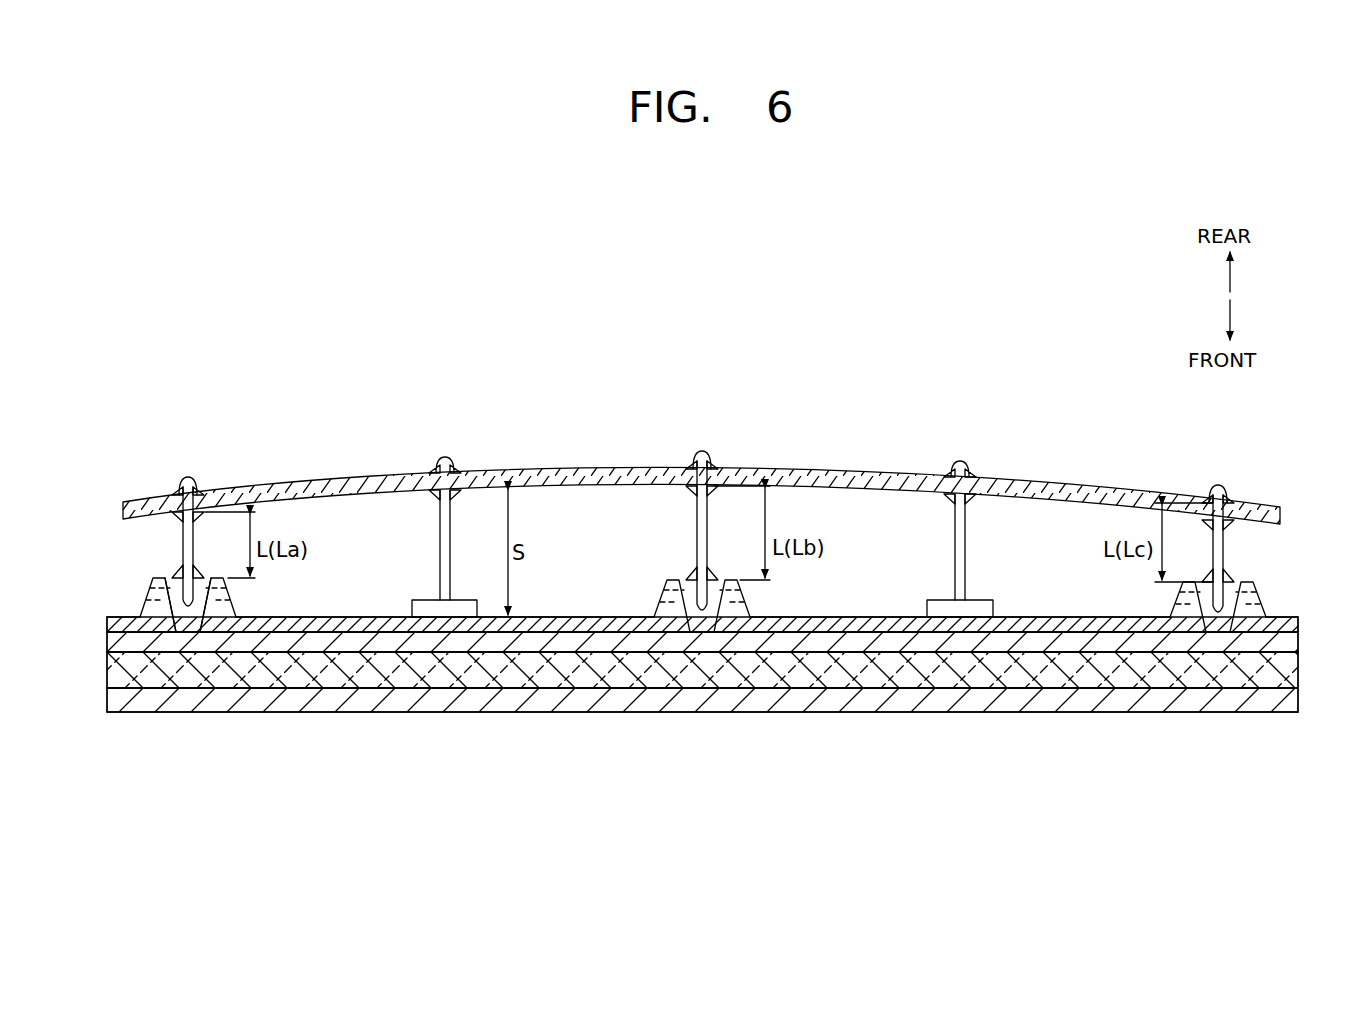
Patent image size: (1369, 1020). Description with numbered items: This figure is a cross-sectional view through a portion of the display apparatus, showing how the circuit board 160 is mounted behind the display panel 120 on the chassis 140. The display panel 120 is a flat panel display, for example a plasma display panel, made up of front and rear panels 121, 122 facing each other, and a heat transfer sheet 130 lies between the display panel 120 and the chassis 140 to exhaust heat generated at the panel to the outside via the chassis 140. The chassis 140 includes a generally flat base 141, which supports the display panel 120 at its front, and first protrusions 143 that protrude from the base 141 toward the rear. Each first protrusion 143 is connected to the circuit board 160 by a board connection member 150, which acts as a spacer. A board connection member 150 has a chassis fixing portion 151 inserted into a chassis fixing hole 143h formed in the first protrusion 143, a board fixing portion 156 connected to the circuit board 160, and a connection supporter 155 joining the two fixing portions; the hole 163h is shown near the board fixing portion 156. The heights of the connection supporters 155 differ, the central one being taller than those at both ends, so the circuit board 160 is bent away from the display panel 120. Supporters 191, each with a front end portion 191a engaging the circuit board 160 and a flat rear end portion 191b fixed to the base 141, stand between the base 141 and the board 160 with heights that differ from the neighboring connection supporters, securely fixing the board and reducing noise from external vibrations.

The display panel 120 is at (1232, 768).
The front panel 121 is at (1228, 698).
The rear panel 122 is at (1158, 677).
The heat transfer sheet 130 is at (888, 648).
The chassis 140 is at (1302, 622).
The base 141 is at (114, 622).
The first protrusion 143 is at (152, 587).
The chassis fixing hole 143h is at (172, 600).
The board connection member 150 is at (176, 458).
The chassis fixing portion 151 is at (190, 600).
The connection supporter 155 is at (192, 545).
The board fixing portion 156 is at (190, 472).
The through hole 163h is at (177, 490).
The circuit board 160 is at (1036, 476).
The supporter 191 is at (440, 552).
The front end portion 191a is at (450, 458).
The rear end portion 191b is at (440, 614).